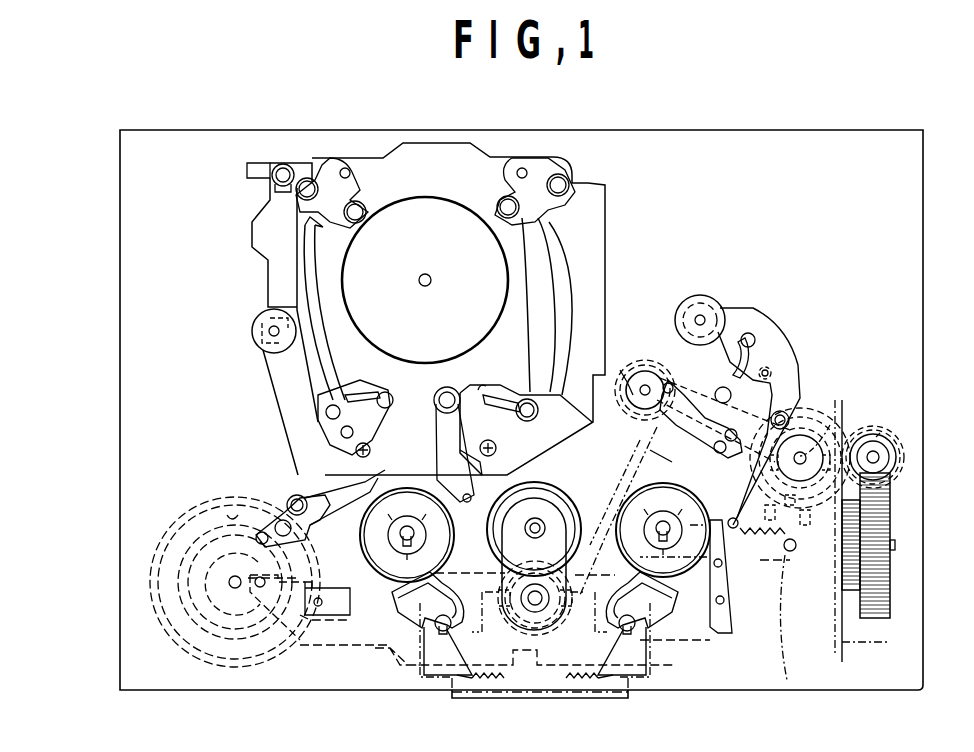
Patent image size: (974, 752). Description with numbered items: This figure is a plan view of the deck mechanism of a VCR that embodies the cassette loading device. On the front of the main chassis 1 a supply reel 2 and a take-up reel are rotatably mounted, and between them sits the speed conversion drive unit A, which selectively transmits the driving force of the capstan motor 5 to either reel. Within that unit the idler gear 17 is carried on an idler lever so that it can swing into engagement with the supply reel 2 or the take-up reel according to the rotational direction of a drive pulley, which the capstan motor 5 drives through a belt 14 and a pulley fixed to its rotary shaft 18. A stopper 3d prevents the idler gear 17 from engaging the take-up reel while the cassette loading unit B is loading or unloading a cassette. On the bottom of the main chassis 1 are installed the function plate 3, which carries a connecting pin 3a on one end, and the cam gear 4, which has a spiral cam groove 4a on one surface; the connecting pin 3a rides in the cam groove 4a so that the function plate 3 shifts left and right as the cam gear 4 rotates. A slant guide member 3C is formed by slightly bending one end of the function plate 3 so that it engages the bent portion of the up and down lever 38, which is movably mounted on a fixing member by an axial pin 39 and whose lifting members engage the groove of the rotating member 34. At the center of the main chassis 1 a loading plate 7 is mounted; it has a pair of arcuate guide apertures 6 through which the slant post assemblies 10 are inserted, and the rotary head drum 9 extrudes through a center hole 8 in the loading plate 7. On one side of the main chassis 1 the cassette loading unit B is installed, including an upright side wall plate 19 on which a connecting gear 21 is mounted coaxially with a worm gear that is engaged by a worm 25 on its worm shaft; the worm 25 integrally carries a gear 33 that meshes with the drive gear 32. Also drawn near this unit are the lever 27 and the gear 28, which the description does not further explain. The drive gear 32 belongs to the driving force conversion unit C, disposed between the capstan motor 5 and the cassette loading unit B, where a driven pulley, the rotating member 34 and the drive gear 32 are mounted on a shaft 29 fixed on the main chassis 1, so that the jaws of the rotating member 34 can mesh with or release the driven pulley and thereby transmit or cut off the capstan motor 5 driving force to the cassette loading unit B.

The main chassis 1 is at (203, 145).
The supply reel 2 is at (392, 565).
The function plate 3 is at (305, 655).
The connecting pin 3a is at (267, 590).
The slant guide member 3C is at (787, 680).
The stopper 3d is at (595, 530).
The cam gear 4 is at (160, 548).
The spiral cam groove 4a is at (175, 583).
The capstan motor 5 is at (648, 370).
The arcuate guide aperture 6 is at (313, 367).
The loading plate 7 is at (594, 178).
The center hole 8 is at (598, 260).
The rotary head drum 9 is at (432, 195).
The slant post assembly 10 is at (318, 418).
The belt 14 is at (648, 462).
The idler gear 17 is at (548, 498).
The rotary shaft 18 is at (672, 384).
The side wall plate 19 is at (890, 641).
The connecting gear 21 is at (870, 548).
The worm 25 is at (884, 443).
The lever 27 is at (748, 335).
The gear 28 is at (800, 450).
The shaft 29 is at (820, 410).
The drive gear 32 is at (880, 435).
The gear of the worm 33 is at (900, 470).
The rotating member 34 is at (845, 402).
The up and down lever 38 is at (905, 485).
The axial pin 39 is at (845, 500).
The speed conversion drive unit A is at (556, 635).
The cassette loading unit B is at (898, 608).
The driving force conversion unit C is at (866, 368).